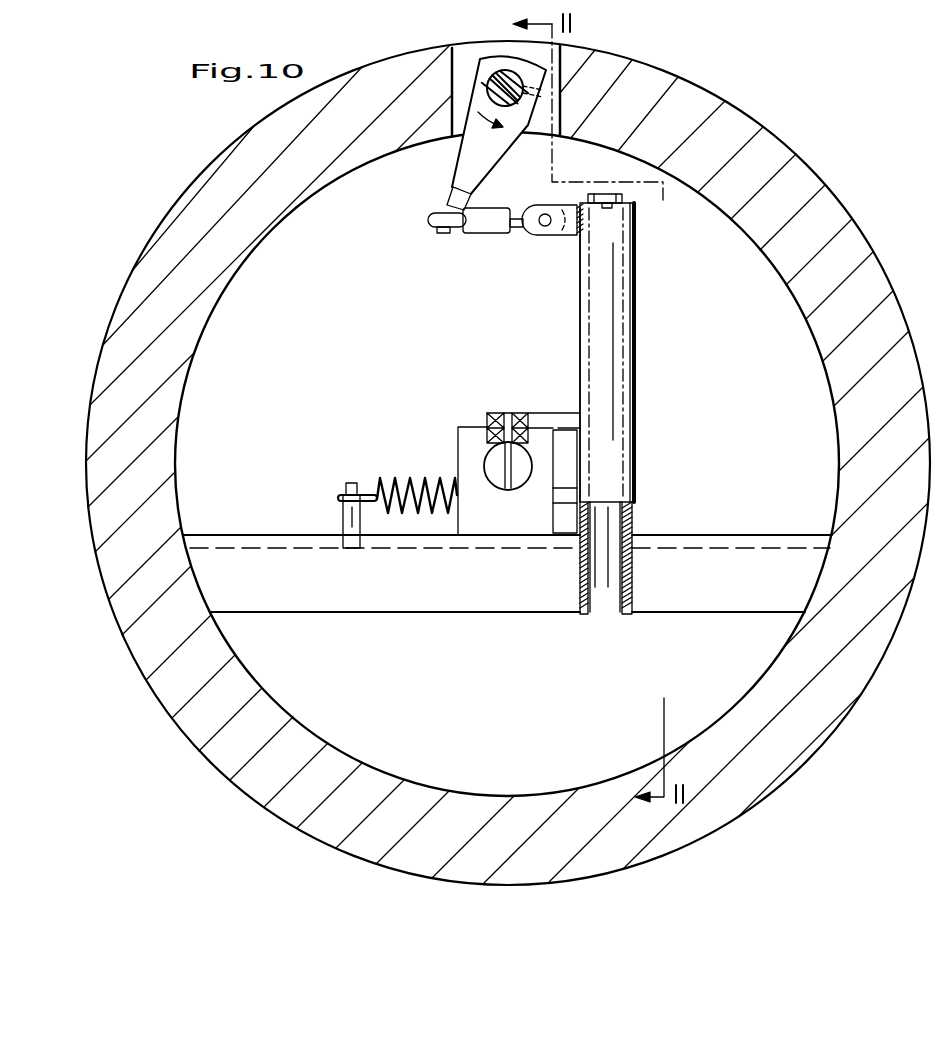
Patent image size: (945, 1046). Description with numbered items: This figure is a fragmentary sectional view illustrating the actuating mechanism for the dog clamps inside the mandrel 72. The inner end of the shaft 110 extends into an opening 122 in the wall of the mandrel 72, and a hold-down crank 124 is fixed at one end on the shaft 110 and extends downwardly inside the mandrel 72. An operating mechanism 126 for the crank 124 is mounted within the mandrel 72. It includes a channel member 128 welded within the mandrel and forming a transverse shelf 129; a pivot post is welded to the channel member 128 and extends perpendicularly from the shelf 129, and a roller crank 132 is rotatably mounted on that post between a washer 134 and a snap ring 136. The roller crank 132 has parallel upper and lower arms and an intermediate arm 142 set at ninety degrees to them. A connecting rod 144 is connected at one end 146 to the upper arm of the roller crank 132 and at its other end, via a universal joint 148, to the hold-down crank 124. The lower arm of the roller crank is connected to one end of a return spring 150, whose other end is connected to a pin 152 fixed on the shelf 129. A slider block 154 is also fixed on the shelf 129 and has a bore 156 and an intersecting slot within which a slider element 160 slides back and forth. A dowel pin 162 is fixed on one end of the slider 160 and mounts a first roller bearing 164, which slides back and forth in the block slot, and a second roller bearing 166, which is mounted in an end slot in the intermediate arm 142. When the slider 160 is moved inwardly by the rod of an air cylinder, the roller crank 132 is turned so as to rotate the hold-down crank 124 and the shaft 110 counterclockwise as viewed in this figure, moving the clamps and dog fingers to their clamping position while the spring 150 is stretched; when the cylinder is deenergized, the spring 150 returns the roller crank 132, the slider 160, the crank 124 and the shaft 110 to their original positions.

The mandrel 72 is at (775, 160).
The opening 122 is at (455, 47).
The shaft 110 is at (503, 75).
The hold-down crank 124 is at (466, 163).
The universal joint 148 is at (437, 221).
The connecting rod 144 is at (483, 235).
The end of connecting rod 146 is at (546, 238).
The snap ring 136 is at (636, 205).
The roller crank 132 is at (640, 312).
The operating mechanism 126 is at (538, 300).
The intermediate arm 142 is at (551, 411).
The second roller bearing 166 is at (491, 410).
The first roller bearing 164 is at (483, 425).
The slider element 160 is at (492, 456).
The dowel pin 162 is at (503, 467).
The bore 156 is at (530, 469).
The slider block 154 is at (495, 518).
The return spring 150 is at (386, 482).
The pin 152 is at (343, 513).
The washer 134 is at (631, 506).
The transverse shelf 129 is at (671, 535).
The channel member 128 is at (771, 556).